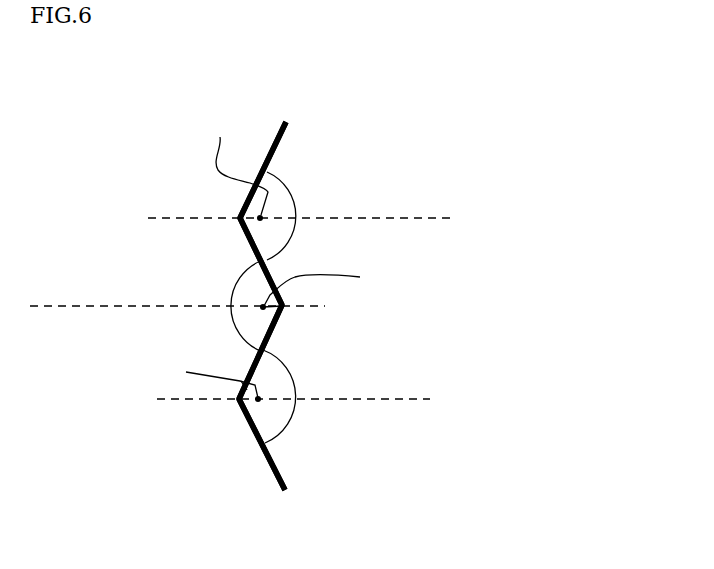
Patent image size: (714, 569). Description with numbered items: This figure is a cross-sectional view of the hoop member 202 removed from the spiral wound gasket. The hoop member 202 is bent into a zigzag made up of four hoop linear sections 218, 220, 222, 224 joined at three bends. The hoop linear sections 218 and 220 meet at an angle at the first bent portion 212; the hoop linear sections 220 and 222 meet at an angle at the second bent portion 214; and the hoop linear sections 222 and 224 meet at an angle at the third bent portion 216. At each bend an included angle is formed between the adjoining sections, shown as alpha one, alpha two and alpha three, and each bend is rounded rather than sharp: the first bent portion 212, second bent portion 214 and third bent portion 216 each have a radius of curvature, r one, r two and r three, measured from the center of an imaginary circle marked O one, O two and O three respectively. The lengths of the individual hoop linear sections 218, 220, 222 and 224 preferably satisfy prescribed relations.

The hoop member 202 is at (535, 121).
The first bent portion 212 is at (240, 213).
The second bent portion 214 is at (283, 305).
The third bent portion 216 is at (237, 400).
The hoop linear section 218 is at (288, 133).
The hoop linear section 220 is at (266, 271).
The hoop linear section 222 is at (267, 353).
The hoop linear section 224 is at (279, 468).